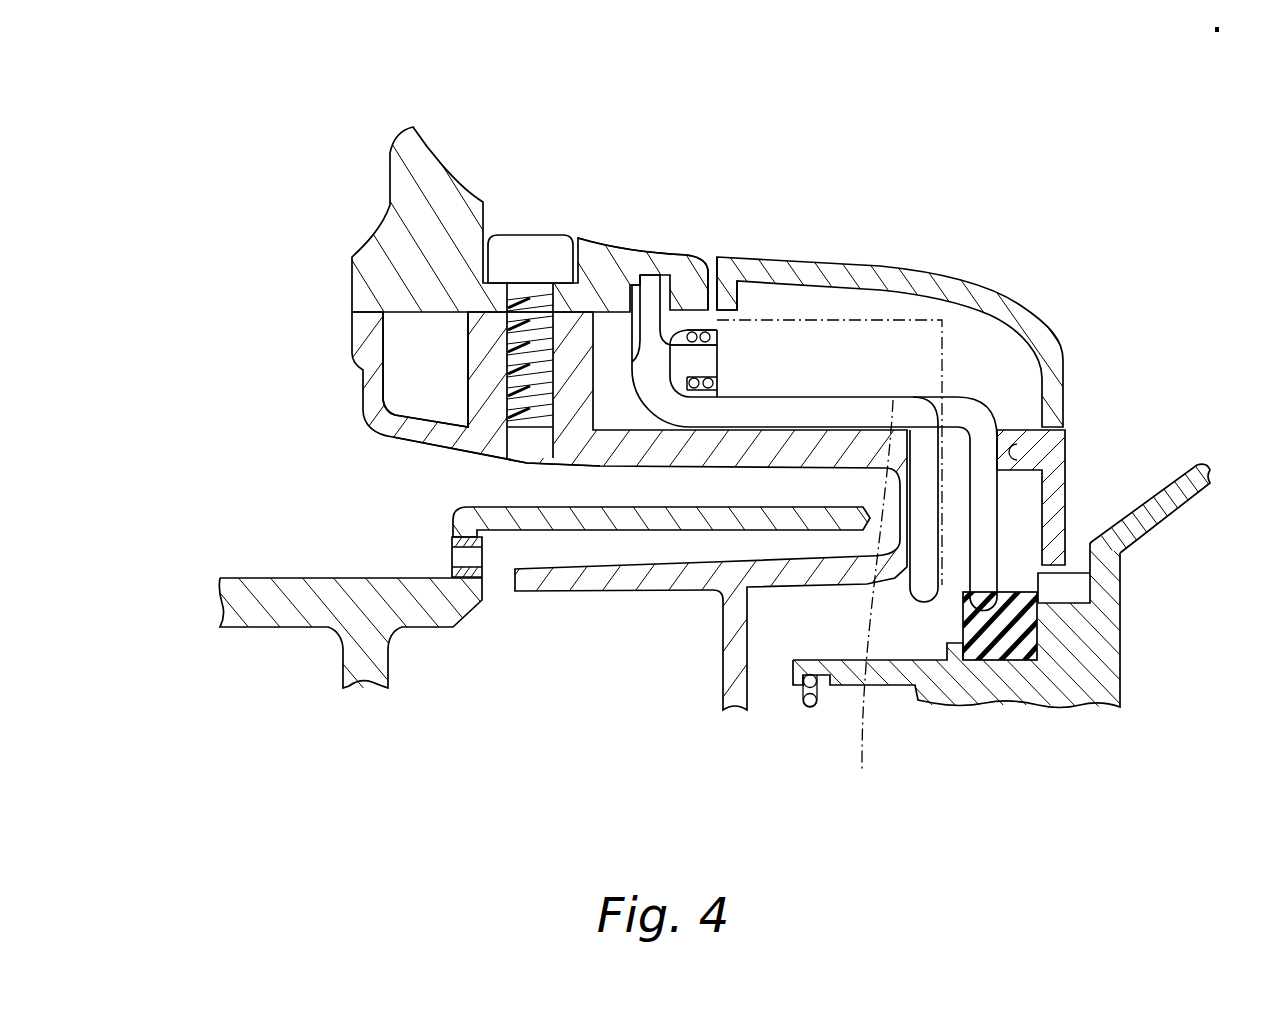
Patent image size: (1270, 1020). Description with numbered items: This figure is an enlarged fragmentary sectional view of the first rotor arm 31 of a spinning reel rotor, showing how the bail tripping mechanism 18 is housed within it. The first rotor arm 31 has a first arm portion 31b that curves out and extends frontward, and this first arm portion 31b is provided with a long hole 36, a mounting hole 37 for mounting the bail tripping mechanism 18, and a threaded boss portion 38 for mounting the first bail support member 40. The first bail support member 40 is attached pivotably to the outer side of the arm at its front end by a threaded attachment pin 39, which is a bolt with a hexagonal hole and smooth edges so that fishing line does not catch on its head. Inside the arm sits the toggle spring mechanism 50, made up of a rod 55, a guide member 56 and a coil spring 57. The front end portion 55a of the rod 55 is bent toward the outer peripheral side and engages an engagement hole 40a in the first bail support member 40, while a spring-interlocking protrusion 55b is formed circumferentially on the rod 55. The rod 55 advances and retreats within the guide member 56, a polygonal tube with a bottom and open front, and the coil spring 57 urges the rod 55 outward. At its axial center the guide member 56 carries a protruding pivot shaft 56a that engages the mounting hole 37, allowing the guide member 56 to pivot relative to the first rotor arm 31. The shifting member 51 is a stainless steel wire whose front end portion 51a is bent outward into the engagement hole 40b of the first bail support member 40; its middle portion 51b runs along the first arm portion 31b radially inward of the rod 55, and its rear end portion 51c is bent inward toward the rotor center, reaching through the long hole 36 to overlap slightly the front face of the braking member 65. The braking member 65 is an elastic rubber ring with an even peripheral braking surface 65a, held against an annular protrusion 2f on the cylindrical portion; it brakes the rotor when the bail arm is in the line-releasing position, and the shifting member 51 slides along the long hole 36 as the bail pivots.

The first bail support member 40 is at (425, 183).
The engagement hole 40a is at (600, 250).
The engagement hole 40b is at (653, 268).
The threaded attachment pin 39 is at (517, 255).
The threaded boss portion 38 is at (487, 367).
The first rotor arm 31 is at (400, 443).
The first arm portion 31b is at (480, 437).
The mounting hole 37 is at (750, 445).
The rod 55 is at (633, 370).
The front end portion 55a is at (657, 270).
The spring-interlocking protrusion 55b is at (680, 282).
The shifting member 51 is at (838, 385).
The front end portion 51a is at (680, 273).
The middle portion 51b is at (871, 408).
The rear end portion 51c is at (980, 457).
The toggle spring mechanism 50 is at (903, 312).
The coil spring 57 is at (740, 250).
The guide member 56 is at (958, 333).
The pivot shaft 56a is at (870, 604).
The bail tripping mechanism 18 is at (883, 444).
The long hole 36 is at (1013, 460).
The braking member 65 is at (1010, 664).
The peripheral braking surface 65a is at (1100, 543).
The annular protrusion 2f is at (953, 650).